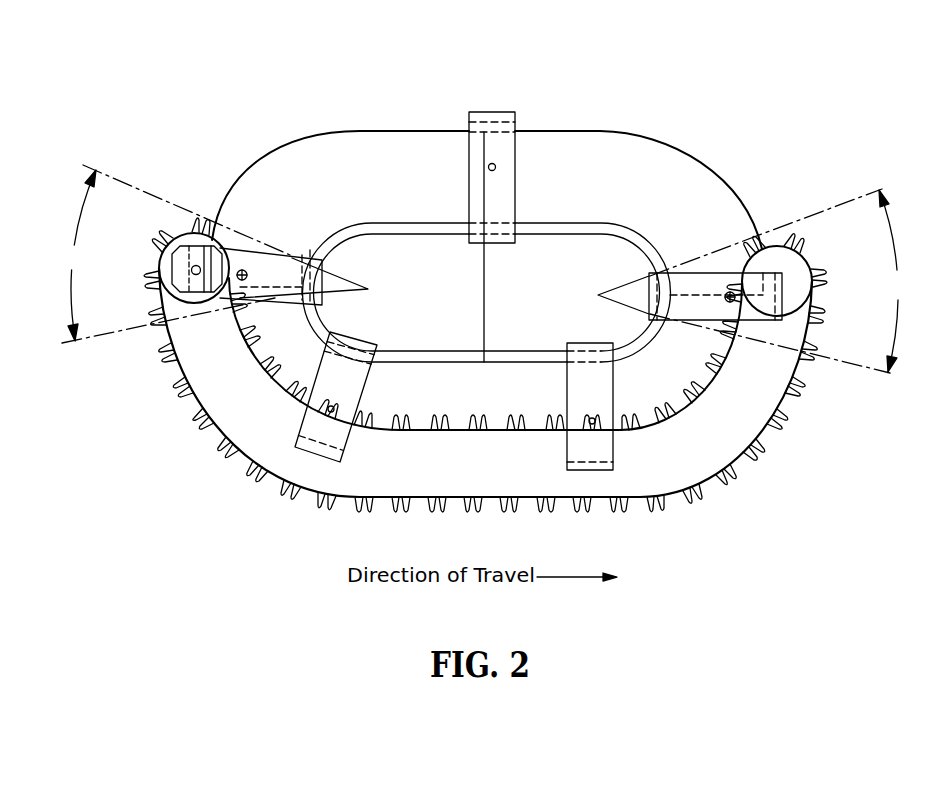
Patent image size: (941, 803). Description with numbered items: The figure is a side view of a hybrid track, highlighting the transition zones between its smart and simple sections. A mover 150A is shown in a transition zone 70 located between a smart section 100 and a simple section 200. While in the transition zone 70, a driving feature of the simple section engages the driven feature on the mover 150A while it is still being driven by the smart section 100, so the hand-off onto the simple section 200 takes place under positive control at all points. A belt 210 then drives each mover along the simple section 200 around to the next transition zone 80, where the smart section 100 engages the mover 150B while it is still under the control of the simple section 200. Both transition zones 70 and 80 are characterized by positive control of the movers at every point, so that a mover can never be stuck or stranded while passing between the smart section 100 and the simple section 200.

The smart section 100 is at (451, 254).
The mover 150A is at (326, 186).
The mover 150B is at (671, 198).
The simple section 200 is at (454, 392).
The belt 210 is at (485, 394).
The transition zone 70 is at (176, 254).
The transition zone 80 is at (774, 281).